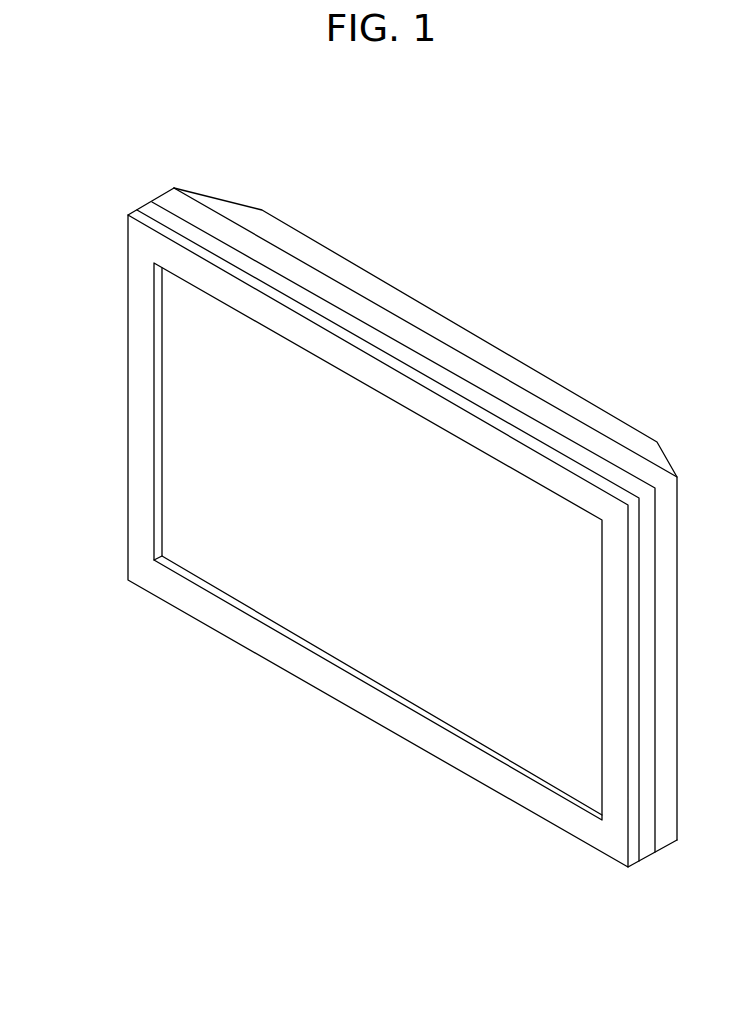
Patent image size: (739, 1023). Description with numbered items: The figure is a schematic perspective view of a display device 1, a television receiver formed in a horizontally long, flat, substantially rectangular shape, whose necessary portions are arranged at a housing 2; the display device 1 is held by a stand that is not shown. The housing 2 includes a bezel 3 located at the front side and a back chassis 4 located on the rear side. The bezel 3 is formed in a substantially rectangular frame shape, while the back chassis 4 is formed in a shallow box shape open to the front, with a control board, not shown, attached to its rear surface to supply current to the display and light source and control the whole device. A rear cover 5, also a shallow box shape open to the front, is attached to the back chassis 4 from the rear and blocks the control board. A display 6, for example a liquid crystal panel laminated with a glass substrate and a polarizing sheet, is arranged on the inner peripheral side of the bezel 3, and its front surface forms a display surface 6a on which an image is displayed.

The display device 1 is at (108, 140).
The housing 2 is at (464, 310).
The bezel 3 is at (138, 252).
The back chassis 4 is at (255, 270).
The rear cover 5 is at (355, 278).
The display 6 is at (183, 353).
The display surface 6a is at (223, 437).